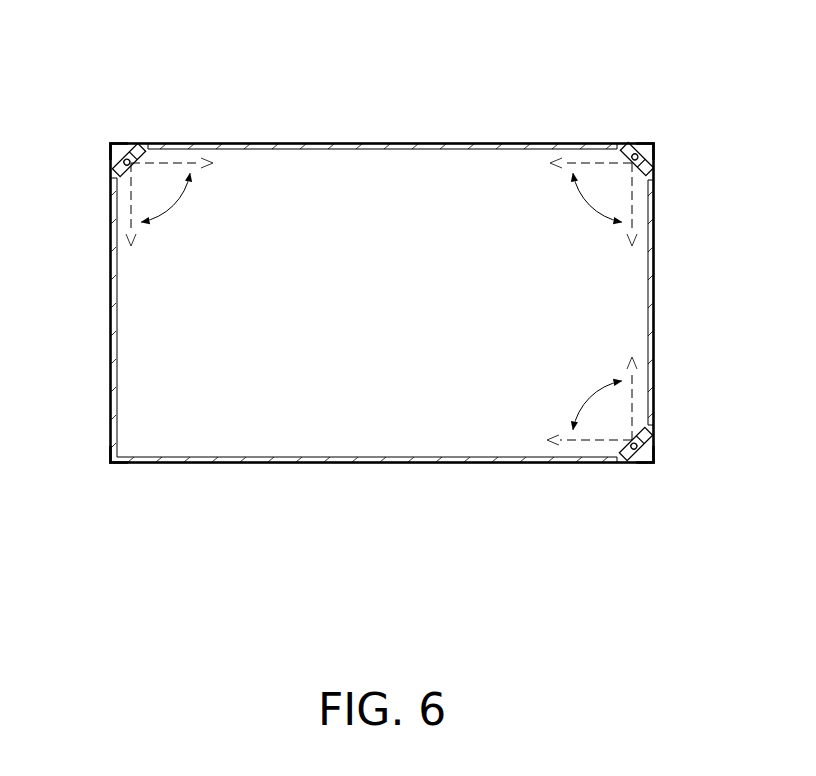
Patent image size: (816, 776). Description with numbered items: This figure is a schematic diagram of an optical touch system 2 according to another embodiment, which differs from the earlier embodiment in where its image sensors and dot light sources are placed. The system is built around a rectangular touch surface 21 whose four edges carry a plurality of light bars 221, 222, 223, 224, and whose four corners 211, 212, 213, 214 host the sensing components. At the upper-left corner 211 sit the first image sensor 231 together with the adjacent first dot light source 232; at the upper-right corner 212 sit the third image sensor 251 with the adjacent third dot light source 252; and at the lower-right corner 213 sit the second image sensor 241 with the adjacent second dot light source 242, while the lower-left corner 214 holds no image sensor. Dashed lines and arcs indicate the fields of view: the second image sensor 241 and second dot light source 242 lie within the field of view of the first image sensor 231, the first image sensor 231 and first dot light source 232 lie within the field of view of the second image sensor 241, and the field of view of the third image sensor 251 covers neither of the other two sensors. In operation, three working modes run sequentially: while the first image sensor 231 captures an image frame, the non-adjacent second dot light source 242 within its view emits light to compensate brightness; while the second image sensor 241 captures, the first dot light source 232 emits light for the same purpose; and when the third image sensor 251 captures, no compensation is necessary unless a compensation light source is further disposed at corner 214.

The optical touch system 2 is at (700, 77).
The touch surface 21 is at (473, 175).
The corner 211 is at (110, 144).
The corner 212 is at (653, 144).
The corner 213 is at (653, 462).
The corner 214 is at (110, 462).
The light bar 221 is at (339, 147).
The light bar 222 is at (650, 328).
The light bar 223 is at (265, 461).
The light bar 224 is at (111, 331).
The first image sensor 231 is at (135, 150).
The first dot light source 232 is at (115, 167).
The second image sensor 241 is at (625, 455).
The second dot light source 242 is at (650, 437).
The third image sensor 251 is at (645, 173).
The third dot light source 252 is at (638, 158).